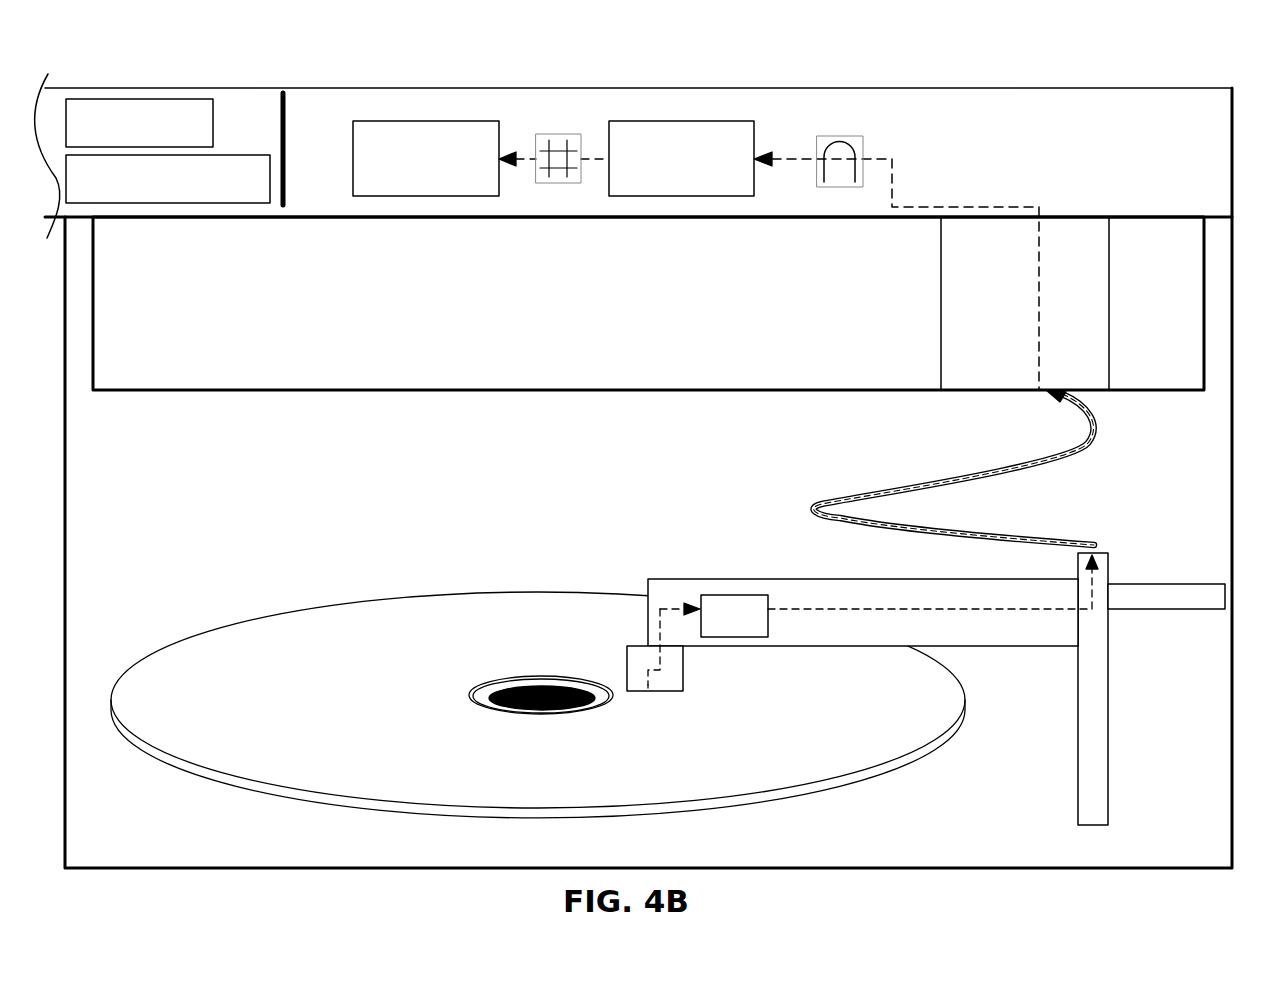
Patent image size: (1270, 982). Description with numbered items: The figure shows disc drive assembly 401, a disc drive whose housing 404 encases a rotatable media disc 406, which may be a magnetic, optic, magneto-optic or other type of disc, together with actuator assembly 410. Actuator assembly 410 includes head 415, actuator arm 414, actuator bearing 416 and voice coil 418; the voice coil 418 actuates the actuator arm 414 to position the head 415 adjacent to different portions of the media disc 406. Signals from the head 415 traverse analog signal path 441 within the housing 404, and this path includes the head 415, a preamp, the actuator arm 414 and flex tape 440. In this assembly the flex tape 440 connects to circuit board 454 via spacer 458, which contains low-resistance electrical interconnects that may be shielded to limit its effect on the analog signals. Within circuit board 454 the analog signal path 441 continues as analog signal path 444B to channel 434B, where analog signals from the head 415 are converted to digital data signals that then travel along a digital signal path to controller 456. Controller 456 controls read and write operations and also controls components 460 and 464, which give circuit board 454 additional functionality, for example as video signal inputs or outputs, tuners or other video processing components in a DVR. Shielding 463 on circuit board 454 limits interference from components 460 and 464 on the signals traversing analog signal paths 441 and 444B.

The disc drive assembly 401 is at (118, 71).
The housing 404 is at (234, 870).
The media disc 406 is at (311, 746).
The actuator assembly 410 is at (730, 552).
The actuator arm 414 is at (932, 639).
The head 415 is at (663, 681).
The actuator bearing 416 is at (1092, 721).
The voice coil 418 is at (713, 635).
The channel 434B is at (655, 171).
The flex tape 440 is at (1032, 472).
The analog signal path 441 is at (649, 703).
The analog signal path 444B is at (549, 134).
The circuit board 454 is at (1124, 159).
The controller 456 is at (406, 171).
The spacer 458 is at (974, 316).
The component 460 is at (119, 134).
The shielding 463 is at (278, 121).
The component 464 is at (156, 192).